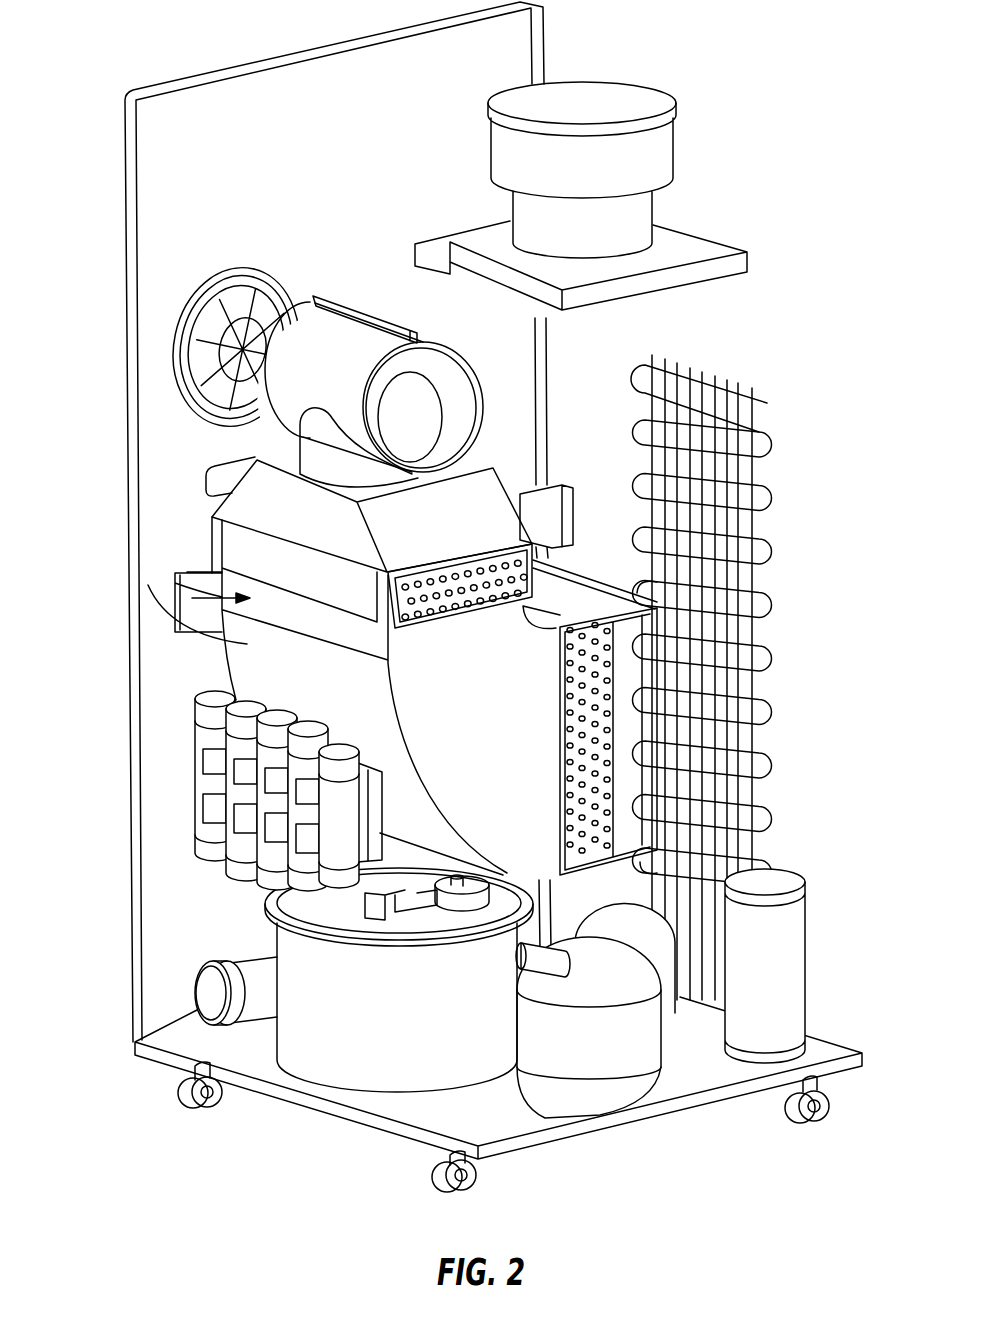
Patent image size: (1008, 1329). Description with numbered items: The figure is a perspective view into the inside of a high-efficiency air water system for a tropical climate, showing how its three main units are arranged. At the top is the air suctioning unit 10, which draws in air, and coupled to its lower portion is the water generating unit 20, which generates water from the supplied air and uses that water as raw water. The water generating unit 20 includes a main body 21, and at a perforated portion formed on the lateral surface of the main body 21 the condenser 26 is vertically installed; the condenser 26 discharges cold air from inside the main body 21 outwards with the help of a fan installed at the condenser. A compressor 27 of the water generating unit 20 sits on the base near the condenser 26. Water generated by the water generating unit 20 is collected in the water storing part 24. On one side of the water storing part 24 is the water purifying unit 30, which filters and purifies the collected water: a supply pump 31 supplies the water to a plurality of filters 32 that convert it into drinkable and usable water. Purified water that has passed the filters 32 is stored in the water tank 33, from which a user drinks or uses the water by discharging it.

The air suctioning unit 10 is at (305, 340).
The water generating unit 20 is at (212, 527).
The main body 21 is at (175, 575).
The water storing part 24 is at (347, 1062).
The condenser 26 is at (612, 598).
The compressor 27 is at (620, 1095).
The water purifying unit 30 is at (182, 825).
The supply pump 31 is at (220, 988).
The filters 32 is at (198, 773).
The water tank 33 is at (645, 155).